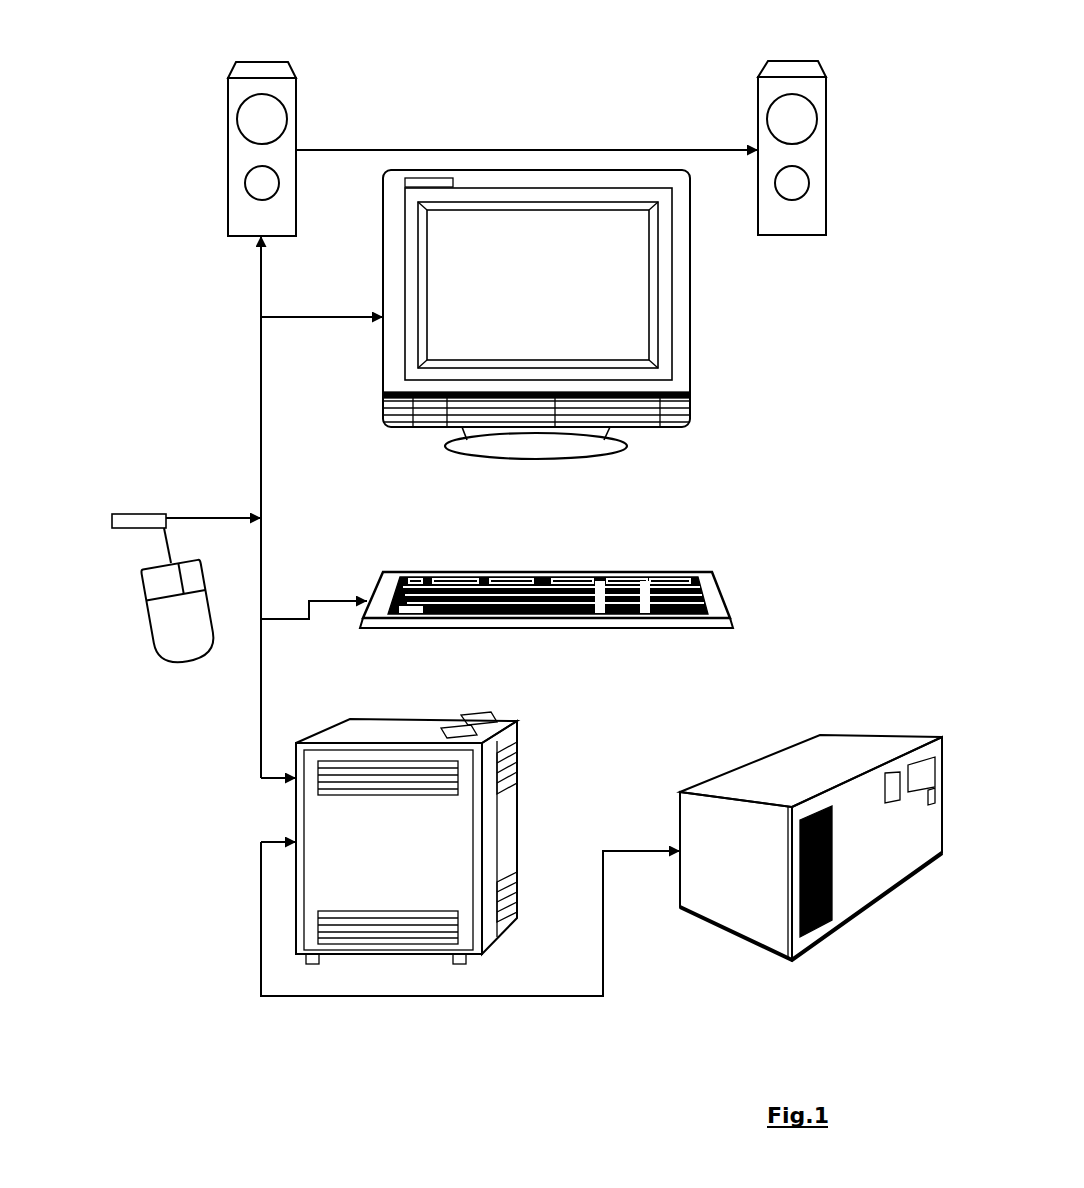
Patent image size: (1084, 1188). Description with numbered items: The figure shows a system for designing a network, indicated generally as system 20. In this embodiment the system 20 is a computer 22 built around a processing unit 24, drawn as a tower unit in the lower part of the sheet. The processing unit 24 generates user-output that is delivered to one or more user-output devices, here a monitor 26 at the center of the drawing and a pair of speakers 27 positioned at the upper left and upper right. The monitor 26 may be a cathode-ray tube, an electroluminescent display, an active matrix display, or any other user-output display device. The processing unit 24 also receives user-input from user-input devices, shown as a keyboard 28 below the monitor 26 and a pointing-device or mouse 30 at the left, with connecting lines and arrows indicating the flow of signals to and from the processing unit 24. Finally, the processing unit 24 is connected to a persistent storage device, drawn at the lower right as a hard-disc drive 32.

The system for designing a network 20 is at (95, 313).
The computer 22 is at (641, 314).
The processing unit 24 is at (519, 721).
The monitor 26 is at (538, 285).
The speakers 27 is at (289, 72).
The keyboard 28 is at (731, 600).
The mouse 30 is at (153, 644).
The hard-disc drive 32 is at (813, 738).